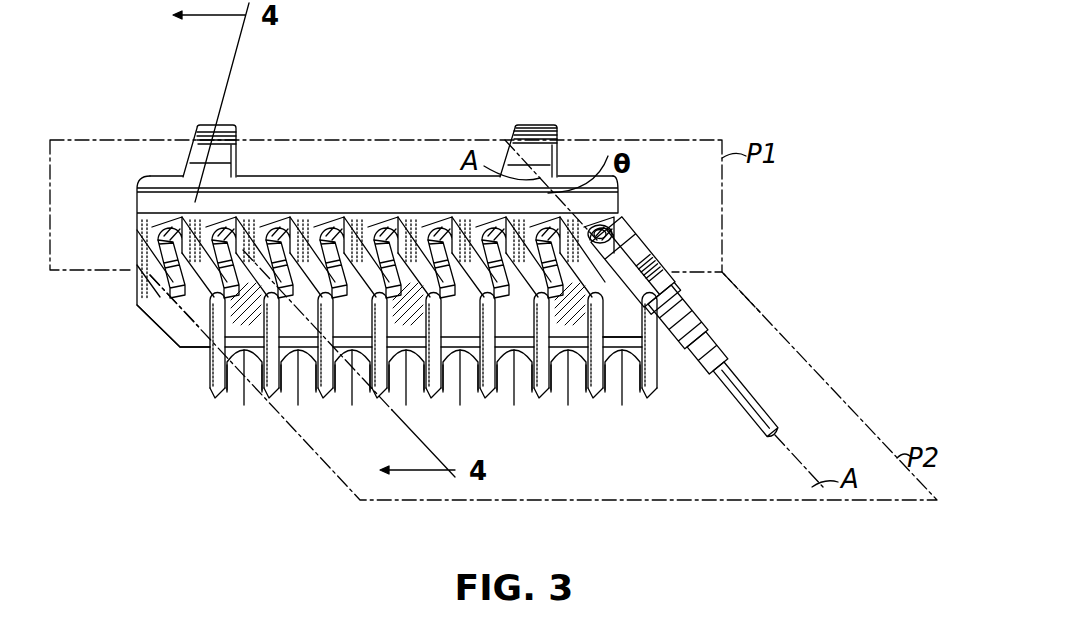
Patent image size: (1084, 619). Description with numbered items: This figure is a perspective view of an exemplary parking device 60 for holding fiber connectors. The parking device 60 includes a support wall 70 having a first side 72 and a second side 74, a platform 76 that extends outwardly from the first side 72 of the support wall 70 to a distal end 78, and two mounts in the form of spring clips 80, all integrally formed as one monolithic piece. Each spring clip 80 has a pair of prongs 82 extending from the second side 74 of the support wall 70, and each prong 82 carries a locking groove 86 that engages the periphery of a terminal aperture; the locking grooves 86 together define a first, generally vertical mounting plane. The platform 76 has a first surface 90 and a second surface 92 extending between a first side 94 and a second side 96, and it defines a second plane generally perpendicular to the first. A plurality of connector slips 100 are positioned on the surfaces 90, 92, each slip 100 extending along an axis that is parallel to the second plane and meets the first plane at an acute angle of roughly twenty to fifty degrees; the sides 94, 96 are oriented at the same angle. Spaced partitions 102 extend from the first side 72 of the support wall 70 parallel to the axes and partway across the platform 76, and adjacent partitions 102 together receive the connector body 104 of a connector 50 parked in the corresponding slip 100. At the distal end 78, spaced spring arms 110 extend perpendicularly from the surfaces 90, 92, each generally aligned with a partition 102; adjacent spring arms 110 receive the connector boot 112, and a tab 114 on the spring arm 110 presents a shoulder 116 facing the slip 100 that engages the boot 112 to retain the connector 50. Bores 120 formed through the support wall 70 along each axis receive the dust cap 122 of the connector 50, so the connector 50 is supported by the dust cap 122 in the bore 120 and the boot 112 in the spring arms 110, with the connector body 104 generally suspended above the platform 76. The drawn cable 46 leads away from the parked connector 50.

The cable 46 is at (747, 392).
The connector 50 is at (724, 356).
The parking device 60 is at (147, 414).
The support wall 70 is at (135, 183).
The first side 72 is at (157, 228).
The second side 74 is at (268, 172).
The platform 76 is at (201, 345).
The distal end 78 is at (405, 350).
The spring clip 80 is at (238, 128).
The prong 82 is at (531, 125).
The locking groove 86 is at (200, 128).
The first surface 90 is at (523, 350).
The second surface 92 is at (463, 363).
The first side 94 is at (200, 322).
The second side 96 is at (732, 296).
The connector slip 100 is at (290, 322).
The partition 102 is at (427, 230).
The connector body 104 is at (622, 226).
The spring arm 110 is at (222, 400).
The connector boot 112 is at (705, 340).
The tab 114 is at (537, 407).
The shoulder 116 is at (560, 367).
The bore 120 is at (387, 200).
The dust cap 122 is at (604, 218).